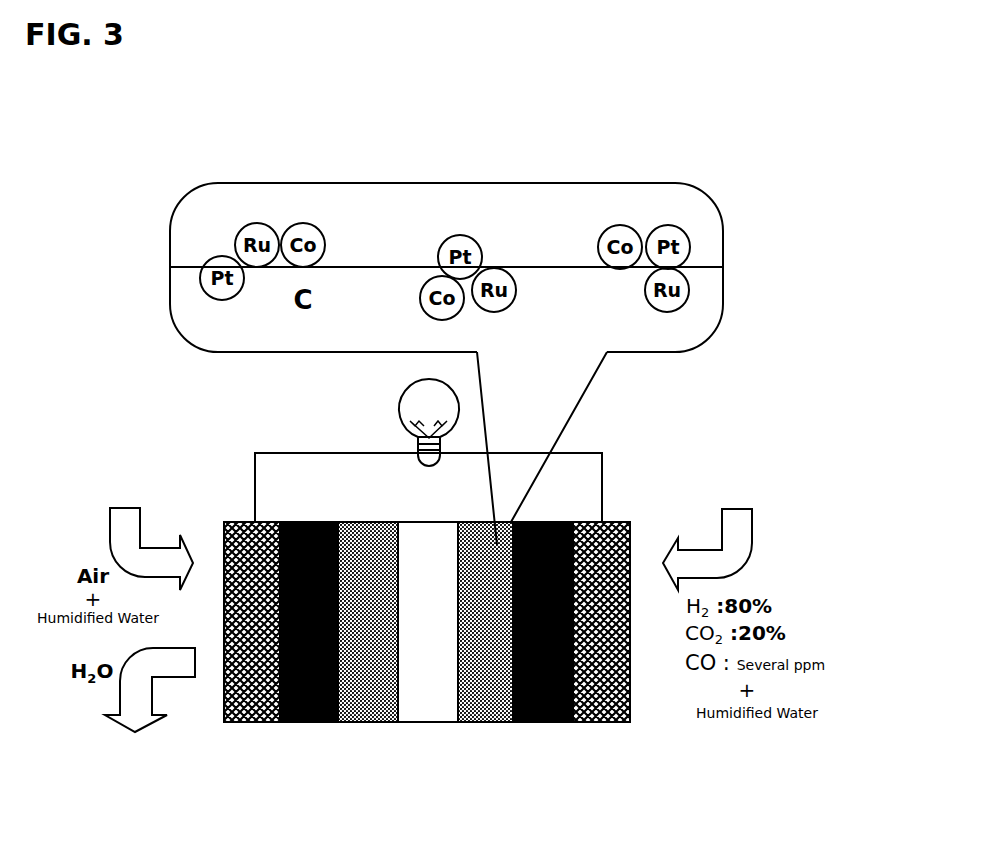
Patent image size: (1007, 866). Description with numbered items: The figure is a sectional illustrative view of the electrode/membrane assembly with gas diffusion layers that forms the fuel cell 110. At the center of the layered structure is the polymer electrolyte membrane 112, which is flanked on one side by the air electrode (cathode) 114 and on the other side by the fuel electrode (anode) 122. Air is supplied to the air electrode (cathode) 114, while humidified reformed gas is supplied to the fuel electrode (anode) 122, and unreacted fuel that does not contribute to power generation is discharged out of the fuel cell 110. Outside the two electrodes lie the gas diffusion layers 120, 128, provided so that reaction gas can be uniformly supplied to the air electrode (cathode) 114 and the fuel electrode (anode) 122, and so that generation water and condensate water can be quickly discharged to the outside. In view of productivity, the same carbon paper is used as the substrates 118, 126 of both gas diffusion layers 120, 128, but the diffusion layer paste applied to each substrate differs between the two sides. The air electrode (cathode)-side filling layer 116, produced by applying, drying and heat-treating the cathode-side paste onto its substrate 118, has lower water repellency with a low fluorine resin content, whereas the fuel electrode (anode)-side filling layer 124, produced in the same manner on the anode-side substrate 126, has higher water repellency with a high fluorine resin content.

The fuel cell 110 is at (717, 426).
The polymer electrolyte membrane 112 is at (410, 722).
The air electrode (cathode) 114 is at (352, 722).
The air electrode (cathode)-side filling layer 116 is at (300, 651).
The substrate 118 is at (235, 722).
The gas diffusion layer 120 is at (270, 670).
The fuel electrode (anode) 122 is at (468, 722).
The fuel electrode (anode)-side filling layer 124 is at (552, 722).
The substrate 126 is at (572, 780).
The gas diffusion layer 128 is at (585, 672).